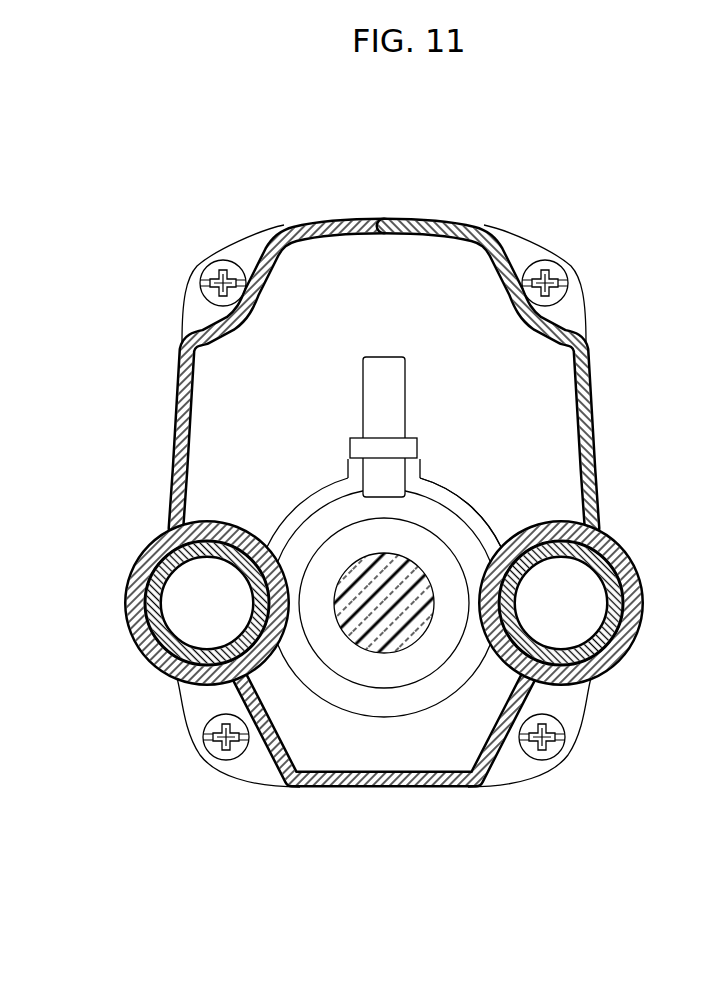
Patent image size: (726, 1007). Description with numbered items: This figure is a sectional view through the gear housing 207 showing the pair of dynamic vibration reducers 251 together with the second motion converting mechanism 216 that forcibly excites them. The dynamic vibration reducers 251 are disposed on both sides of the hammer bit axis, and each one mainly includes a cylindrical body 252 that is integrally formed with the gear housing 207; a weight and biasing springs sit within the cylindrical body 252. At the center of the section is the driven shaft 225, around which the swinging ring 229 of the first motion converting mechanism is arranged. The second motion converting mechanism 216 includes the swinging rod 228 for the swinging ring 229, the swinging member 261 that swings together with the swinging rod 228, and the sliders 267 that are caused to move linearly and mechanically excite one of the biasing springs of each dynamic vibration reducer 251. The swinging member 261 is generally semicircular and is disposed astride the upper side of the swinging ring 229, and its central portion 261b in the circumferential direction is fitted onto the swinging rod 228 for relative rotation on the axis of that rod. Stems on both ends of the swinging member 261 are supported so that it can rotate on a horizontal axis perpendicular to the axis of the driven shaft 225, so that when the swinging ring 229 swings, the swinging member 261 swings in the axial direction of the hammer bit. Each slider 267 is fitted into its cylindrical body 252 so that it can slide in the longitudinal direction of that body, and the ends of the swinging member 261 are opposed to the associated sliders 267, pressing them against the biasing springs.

The gear housing 207 is at (437, 218).
The swinging rod 228 is at (376, 357).
The central portion 261b is at (415, 437).
The second motion converting mechanism 216 is at (465, 485).
The swinging member 261 is at (291, 496).
The cylindrical body 252 is at (132, 575).
The slider 267 is at (148, 653).
The dynamic vibration reducer 251 is at (162, 687).
The swinging ring 229 is at (343, 708).
The driven shaft 225 is at (385, 647).